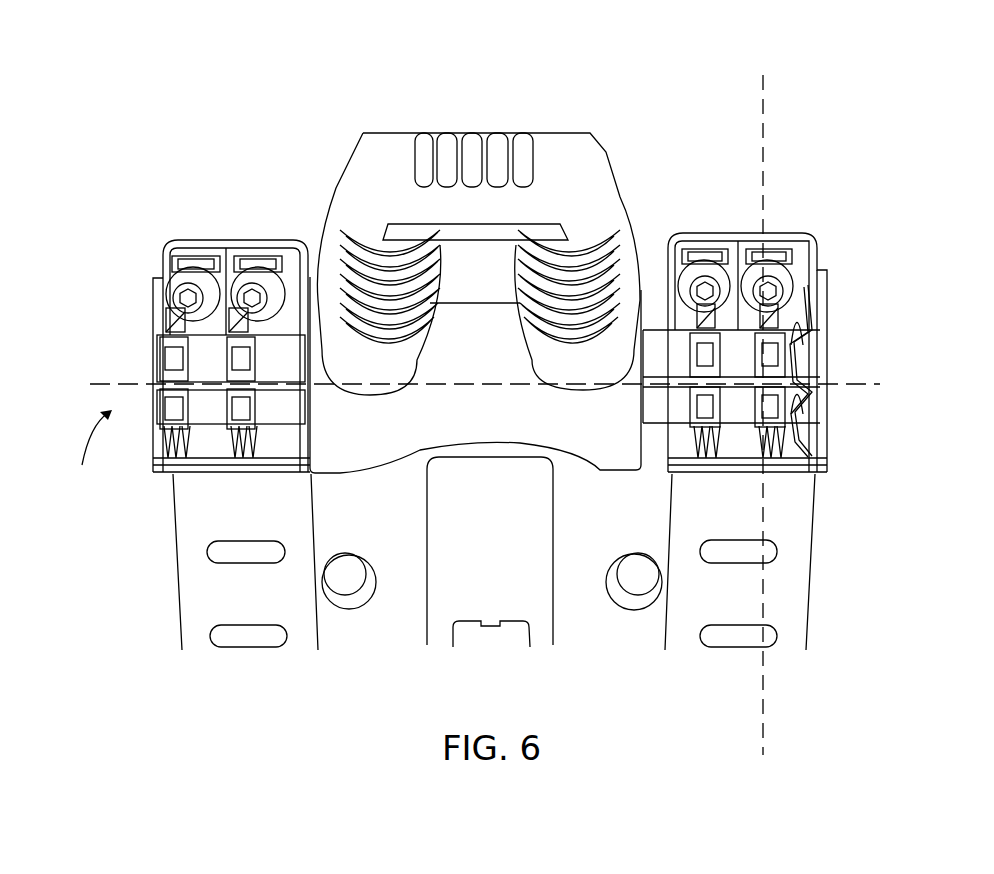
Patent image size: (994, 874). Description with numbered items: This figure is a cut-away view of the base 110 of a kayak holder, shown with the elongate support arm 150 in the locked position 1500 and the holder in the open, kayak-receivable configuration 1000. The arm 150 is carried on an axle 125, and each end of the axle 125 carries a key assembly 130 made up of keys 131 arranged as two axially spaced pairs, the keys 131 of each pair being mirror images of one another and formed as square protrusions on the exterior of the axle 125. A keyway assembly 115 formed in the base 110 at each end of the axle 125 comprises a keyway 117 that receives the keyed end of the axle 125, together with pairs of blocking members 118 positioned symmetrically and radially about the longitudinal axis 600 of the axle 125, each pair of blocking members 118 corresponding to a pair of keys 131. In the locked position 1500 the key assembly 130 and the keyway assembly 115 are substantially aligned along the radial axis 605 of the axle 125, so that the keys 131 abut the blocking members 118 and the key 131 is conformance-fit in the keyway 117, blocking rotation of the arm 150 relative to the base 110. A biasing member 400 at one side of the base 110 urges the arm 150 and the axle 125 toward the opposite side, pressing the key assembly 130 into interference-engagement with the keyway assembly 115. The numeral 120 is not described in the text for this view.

The open, kayak-receivable configuration 1000 is at (495, 27).
The elongate support arm 150 is at (362, 157).
The main body / frame 120 is at (640, 288).
The longitudinal axis 600 is at (132, 385).
The keyway assembly 115 is at (156, 308).
The keyway 117 is at (228, 340).
The key assembly 130 is at (160, 364).
The key 131 is at (157, 401).
The blocking member 118 is at (162, 457).
The base 110 is at (182, 558).
The locked position 1500 is at (88, 451).
The radial axis 605 is at (763, 161).
The biasing member 400 is at (813, 357).
The axle 125 is at (663, 390).